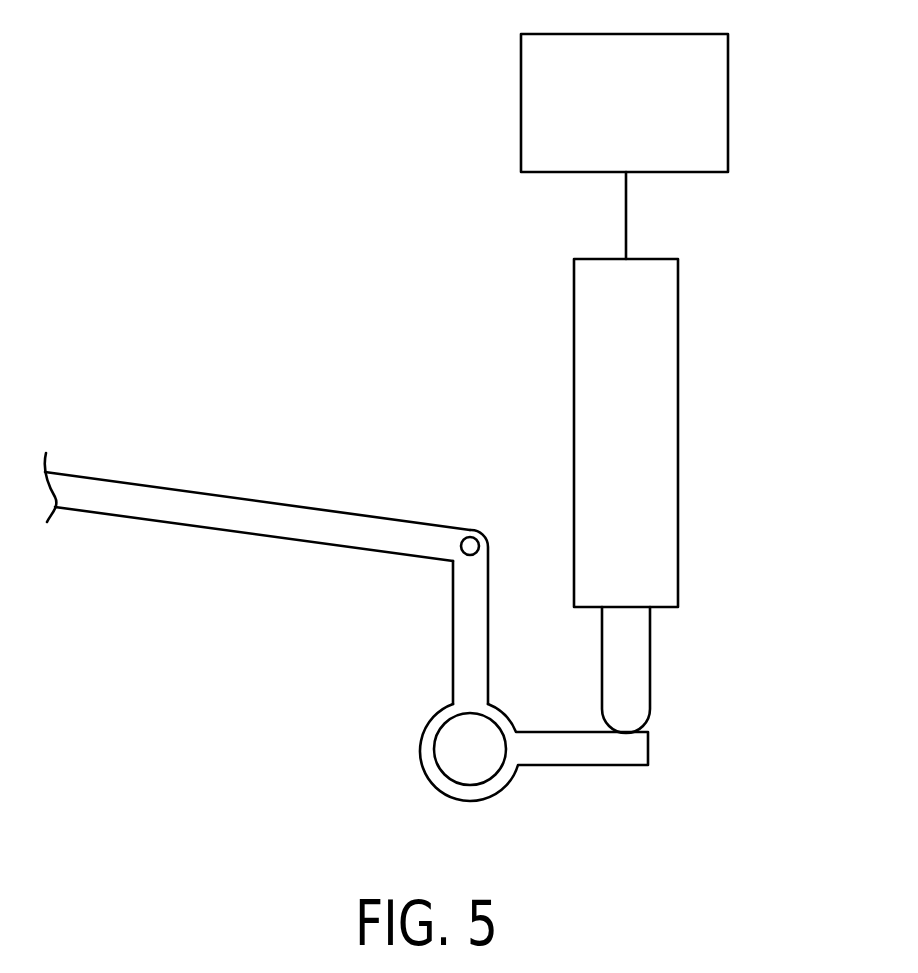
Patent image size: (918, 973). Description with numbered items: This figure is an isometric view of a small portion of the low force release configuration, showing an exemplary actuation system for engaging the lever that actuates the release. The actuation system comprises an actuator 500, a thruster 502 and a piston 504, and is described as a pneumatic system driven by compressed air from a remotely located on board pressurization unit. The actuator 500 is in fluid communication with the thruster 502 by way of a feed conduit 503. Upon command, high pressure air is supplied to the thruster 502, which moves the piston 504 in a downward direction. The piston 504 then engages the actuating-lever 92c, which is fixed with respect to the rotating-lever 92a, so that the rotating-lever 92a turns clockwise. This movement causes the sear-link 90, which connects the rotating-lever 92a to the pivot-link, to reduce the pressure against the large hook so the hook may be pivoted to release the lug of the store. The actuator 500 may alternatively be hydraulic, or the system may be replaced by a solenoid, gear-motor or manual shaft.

The sear-link 90 is at (163, 498).
The rotating-lever 92a is at (473, 607).
The actuating-lever 92c is at (648, 748).
The actuator 500 is at (728, 100).
The thruster 502 is at (678, 410).
The feed conduit 503 is at (626, 205).
The piston 504 is at (650, 650).